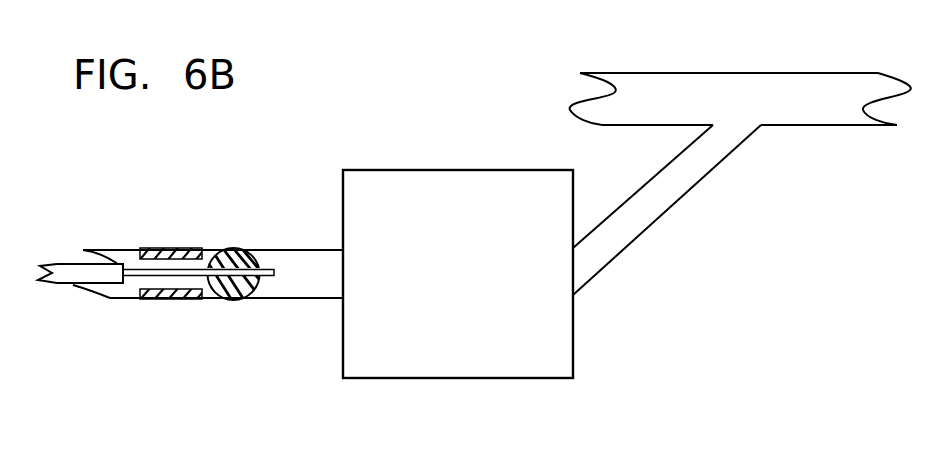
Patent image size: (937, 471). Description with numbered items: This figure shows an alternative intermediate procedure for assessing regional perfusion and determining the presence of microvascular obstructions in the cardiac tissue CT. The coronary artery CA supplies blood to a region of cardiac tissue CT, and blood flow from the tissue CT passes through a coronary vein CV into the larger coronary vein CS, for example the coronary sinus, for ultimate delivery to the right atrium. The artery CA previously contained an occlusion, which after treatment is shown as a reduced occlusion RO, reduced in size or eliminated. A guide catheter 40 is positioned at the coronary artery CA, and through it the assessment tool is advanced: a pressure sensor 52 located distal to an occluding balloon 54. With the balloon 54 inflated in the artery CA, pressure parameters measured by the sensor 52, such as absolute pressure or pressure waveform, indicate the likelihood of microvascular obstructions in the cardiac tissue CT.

The guide catheter 40 is at (65, 262).
The reduced occlusion RO is at (155, 252).
The coronary artery CA is at (267, 250).
The occluding balloon 54 is at (238, 292).
The pressure sensor 52 is at (277, 278).
The cardiac tissue CT is at (485, 378).
The coronary vein CV is at (628, 247).
The coronary sinus CS is at (728, 73).